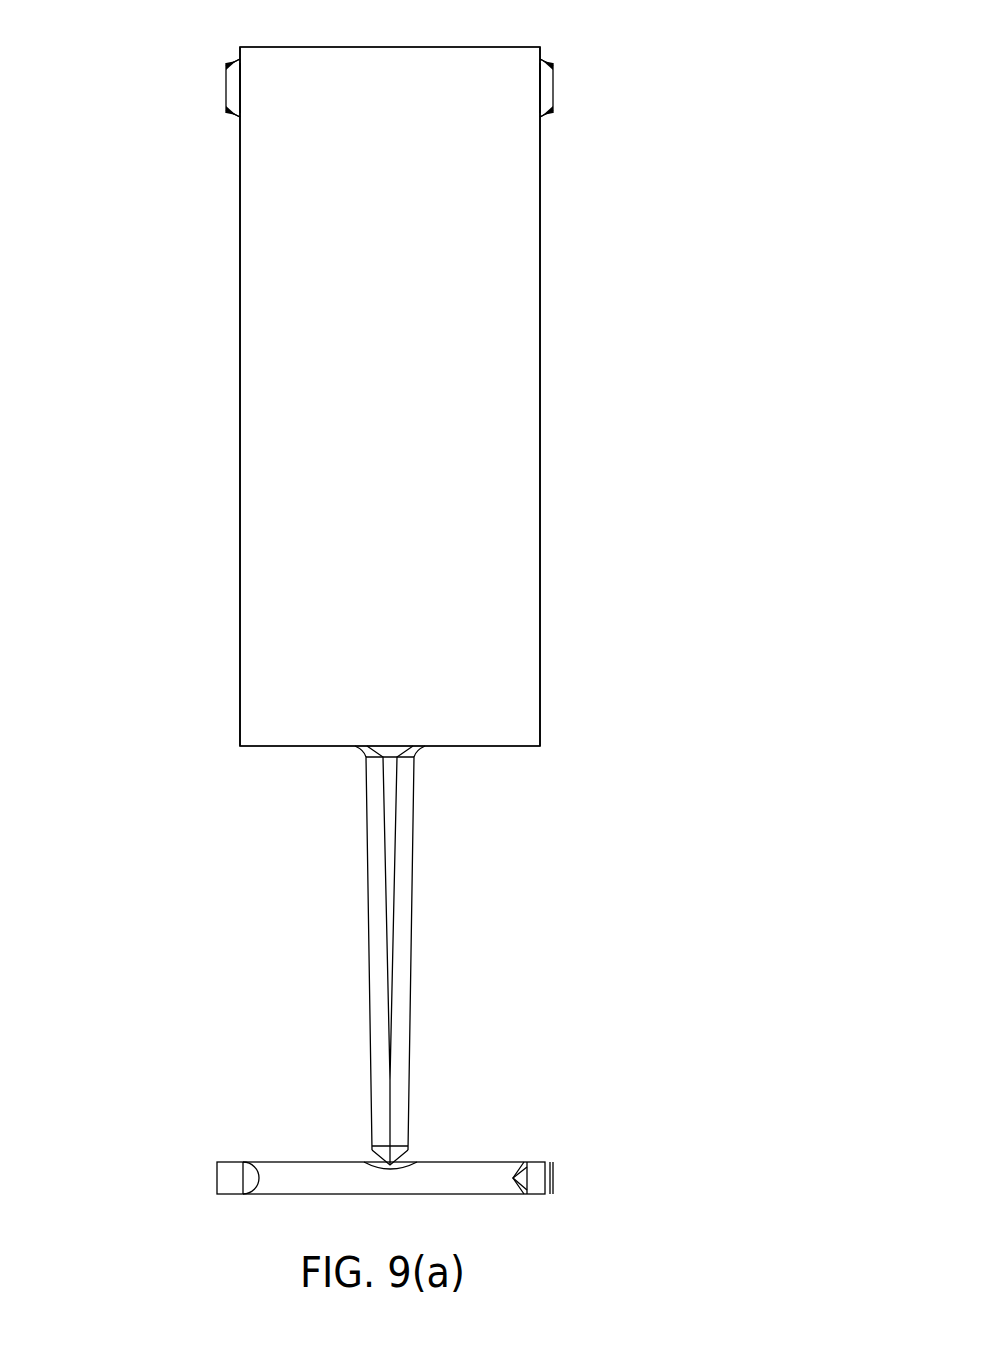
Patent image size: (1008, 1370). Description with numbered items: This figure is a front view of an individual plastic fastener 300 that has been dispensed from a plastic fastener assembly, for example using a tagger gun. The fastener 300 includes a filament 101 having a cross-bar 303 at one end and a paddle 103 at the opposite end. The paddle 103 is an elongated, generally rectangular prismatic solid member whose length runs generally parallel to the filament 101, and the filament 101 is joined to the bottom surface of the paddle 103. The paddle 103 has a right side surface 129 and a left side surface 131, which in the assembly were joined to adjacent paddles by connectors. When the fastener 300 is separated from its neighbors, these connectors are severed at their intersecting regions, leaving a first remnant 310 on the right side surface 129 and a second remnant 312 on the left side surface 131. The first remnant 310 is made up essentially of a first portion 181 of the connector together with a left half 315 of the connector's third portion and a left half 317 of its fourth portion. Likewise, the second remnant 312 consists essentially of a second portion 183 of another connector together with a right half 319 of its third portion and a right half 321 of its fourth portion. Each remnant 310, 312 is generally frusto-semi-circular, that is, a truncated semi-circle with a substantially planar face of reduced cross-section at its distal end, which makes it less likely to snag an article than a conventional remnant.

The individual plastic fastener 300 is at (730, 81).
The paddle 103 is at (415, 394).
The left side surface 131 is at (240, 440).
The right side surface 129 is at (541, 467).
The second remnant 312 is at (222, 90).
The right half of third portion 319 is at (228, 62).
The right half of fourth portion 321 is at (228, 113).
The second portion 183 is at (233, 88).
The first remnant 310 is at (561, 88).
The left half of third portion 315 is at (551, 62).
The left half of fourth portion 317 is at (552, 113).
The first portion 181 is at (546, 88).
The filament 101 is at (412, 890).
The cross-bar 303 is at (475, 1161).